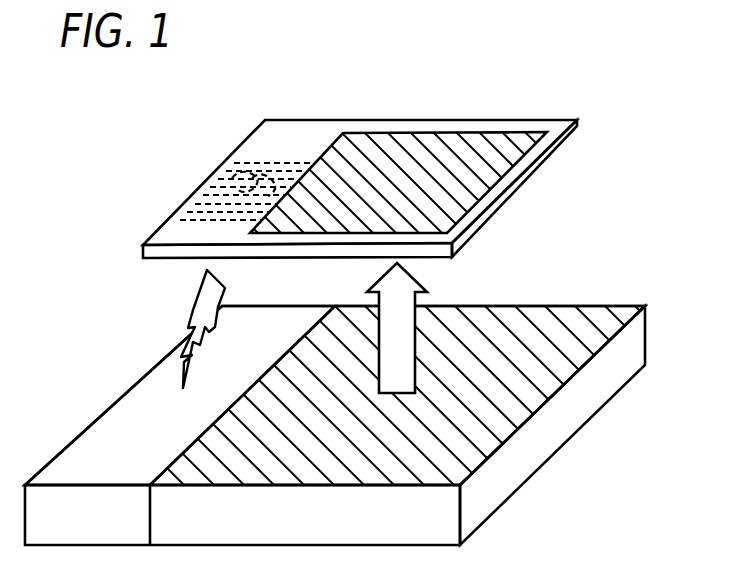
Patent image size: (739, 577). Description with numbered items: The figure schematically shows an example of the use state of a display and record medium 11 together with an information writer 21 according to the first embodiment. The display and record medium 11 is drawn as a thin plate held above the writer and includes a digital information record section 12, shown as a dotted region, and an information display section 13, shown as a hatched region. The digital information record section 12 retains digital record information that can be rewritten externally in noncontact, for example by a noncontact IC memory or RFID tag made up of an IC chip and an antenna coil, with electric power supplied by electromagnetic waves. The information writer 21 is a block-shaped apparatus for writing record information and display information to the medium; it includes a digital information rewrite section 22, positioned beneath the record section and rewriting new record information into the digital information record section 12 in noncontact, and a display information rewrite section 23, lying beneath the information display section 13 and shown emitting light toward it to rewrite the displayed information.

The display and record medium 11 is at (388, 157).
The digital information record section 12 is at (212, 170).
The information display section 13 is at (483, 150).
The information writer 21 is at (369, 400).
The digital information rewrite section 22 is at (122, 422).
The display information rewrite section 23 is at (572, 313).